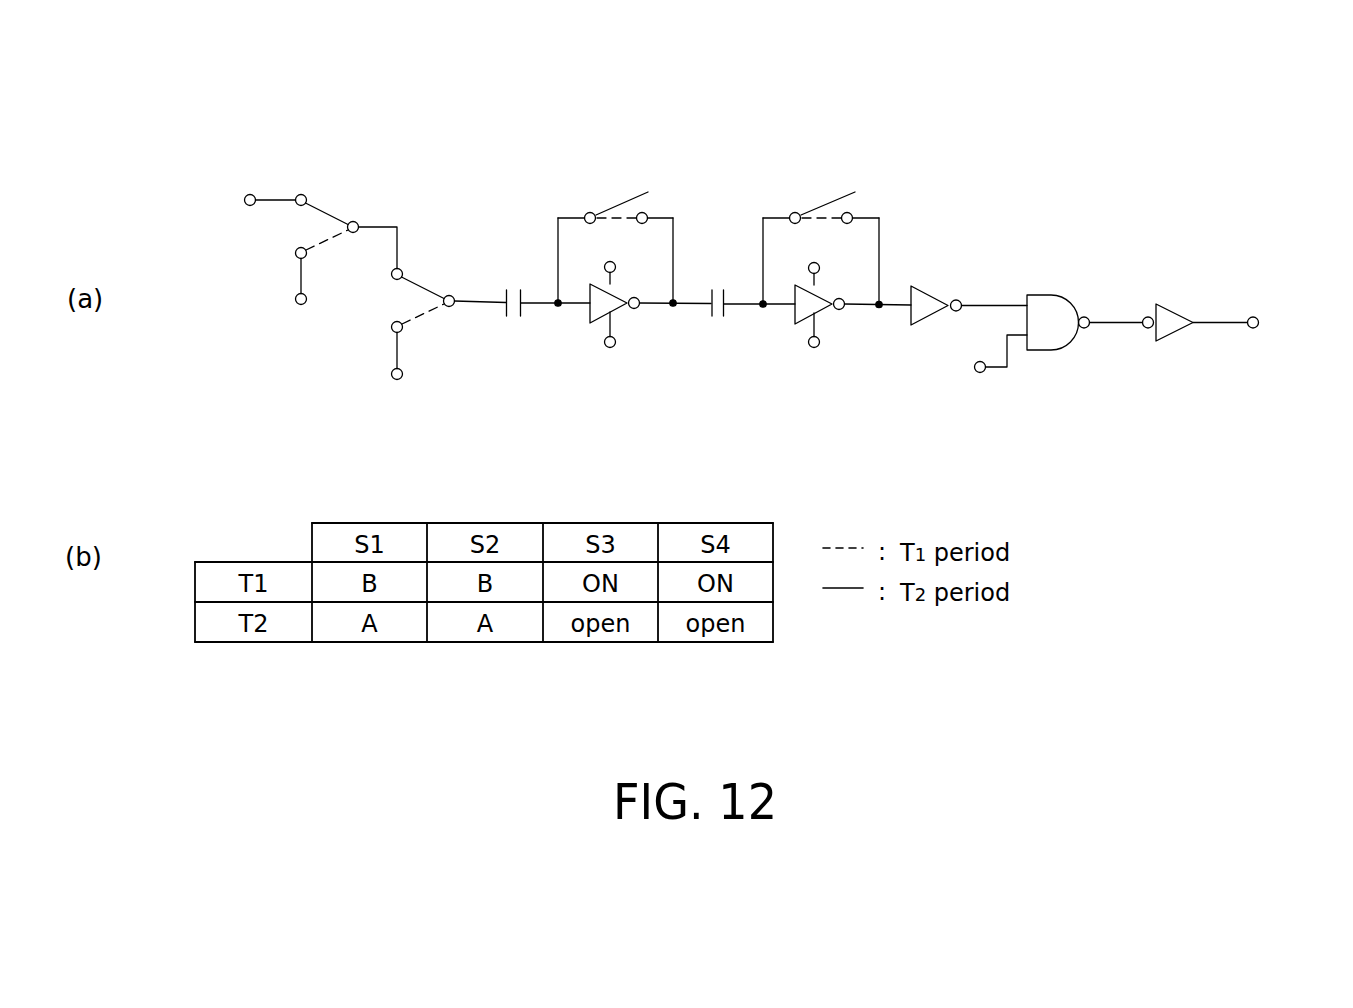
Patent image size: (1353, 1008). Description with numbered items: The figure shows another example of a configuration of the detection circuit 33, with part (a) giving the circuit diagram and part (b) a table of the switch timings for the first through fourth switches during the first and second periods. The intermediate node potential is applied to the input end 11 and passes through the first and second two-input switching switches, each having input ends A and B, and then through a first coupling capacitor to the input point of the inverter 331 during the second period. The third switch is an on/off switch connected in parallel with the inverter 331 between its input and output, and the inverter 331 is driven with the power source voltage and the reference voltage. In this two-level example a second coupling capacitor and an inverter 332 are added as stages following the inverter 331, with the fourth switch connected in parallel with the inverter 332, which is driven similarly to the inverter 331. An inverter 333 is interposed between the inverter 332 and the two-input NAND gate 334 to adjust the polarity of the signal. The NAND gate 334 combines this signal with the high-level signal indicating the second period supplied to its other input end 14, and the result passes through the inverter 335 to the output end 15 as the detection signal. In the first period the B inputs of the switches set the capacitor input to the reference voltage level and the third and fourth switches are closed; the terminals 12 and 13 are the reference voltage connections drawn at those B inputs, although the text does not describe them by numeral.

The input end 11 is at (252, 193).
The Vss terminal of switch S1 12 is at (295, 300).
The Vss terminal of switch S2 13 is at (404, 374).
The other input end 14 is at (980, 375).
The output end 15 is at (1253, 316).
The detection circuit 33 is at (975, 180).
The inverter 331 is at (588, 317).
The inverter 332 is at (797, 320).
The inverter 333 is at (931, 288).
The two-input NAND gate 334 is at (1052, 294).
The inverter 335 is at (1174, 304).